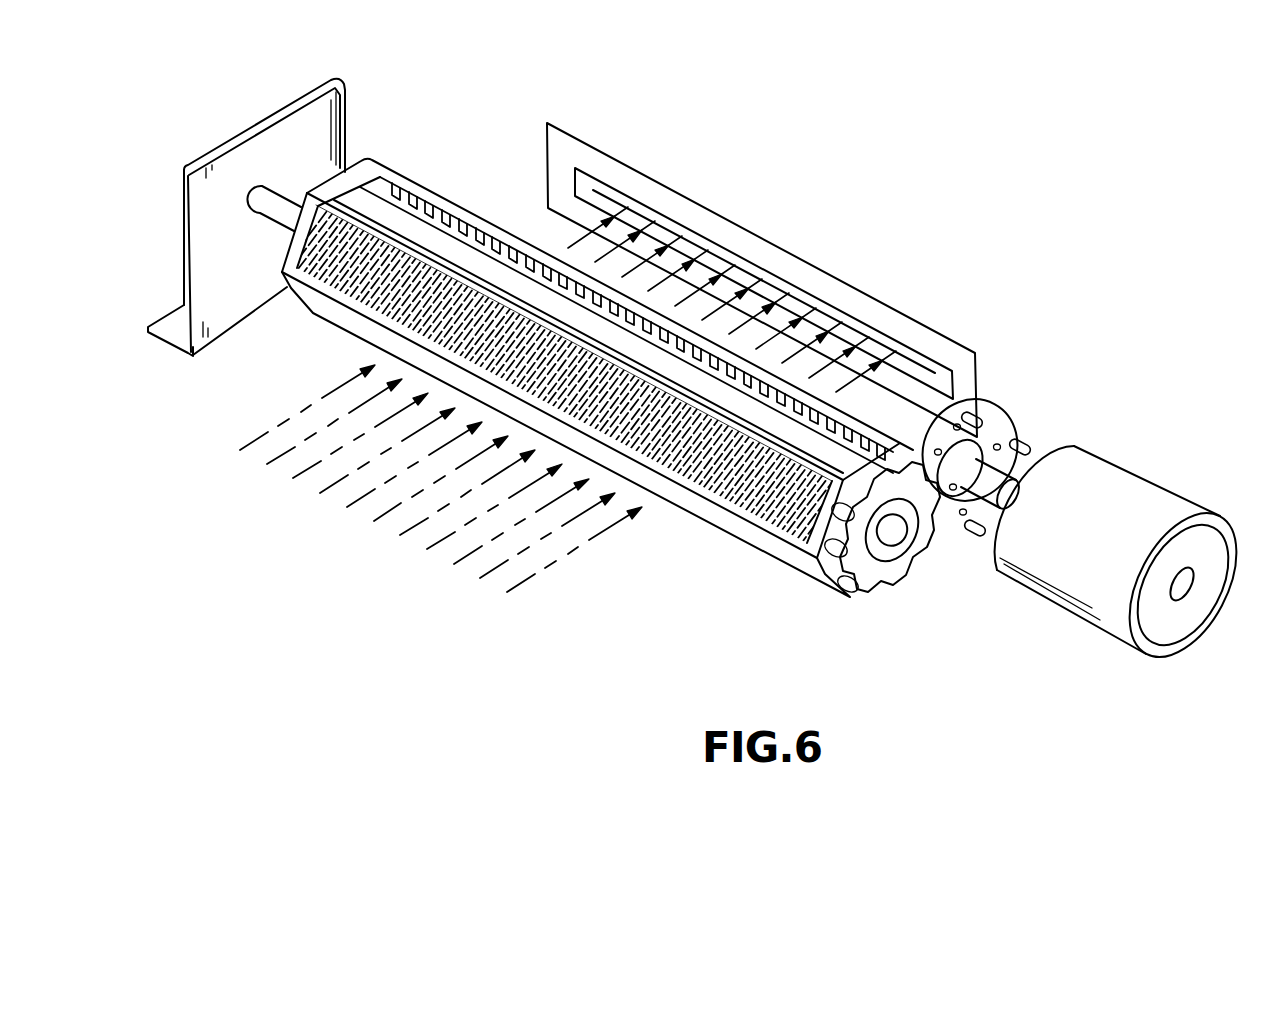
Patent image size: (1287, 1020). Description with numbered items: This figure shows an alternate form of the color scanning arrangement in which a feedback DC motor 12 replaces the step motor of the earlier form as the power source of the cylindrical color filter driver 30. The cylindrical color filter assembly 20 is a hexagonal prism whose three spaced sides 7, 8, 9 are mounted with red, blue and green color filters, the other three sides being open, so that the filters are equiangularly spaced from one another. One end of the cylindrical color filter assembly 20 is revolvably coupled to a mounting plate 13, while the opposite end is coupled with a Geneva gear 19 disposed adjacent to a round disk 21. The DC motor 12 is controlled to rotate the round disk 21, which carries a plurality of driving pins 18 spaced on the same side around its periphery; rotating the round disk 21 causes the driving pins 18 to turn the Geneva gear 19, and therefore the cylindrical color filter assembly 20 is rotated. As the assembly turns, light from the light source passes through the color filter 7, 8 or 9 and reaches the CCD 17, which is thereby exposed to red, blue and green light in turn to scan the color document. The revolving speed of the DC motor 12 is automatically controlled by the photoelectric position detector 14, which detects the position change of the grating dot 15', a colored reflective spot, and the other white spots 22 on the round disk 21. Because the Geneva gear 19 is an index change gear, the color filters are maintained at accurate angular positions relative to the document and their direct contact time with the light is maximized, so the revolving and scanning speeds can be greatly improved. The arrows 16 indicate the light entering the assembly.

The color filter side 7 is at (362, 252).
The color filter side 8 is at (417, 193).
The color filter side 9 is at (381, 205).
The feedback DC motor 12 is at (1127, 487).
The mounting plate 13 is at (276, 139).
The photoelectric position detector 14 is at (1050, 447).
The grating dot 15' is at (988, 381).
The air flow 16 is at (441, 478).
The CCD 17 is at (767, 257).
The driving pins 18 is at (977, 537).
The Geneva gear 19 is at (884, 582).
The cylindrical color filter assembly 20 is at (362, 156).
The round disk 21 is at (996, 400).
The white spots 22 is at (1008, 420).
The cylindrical color filter driver 30 is at (488, 211).